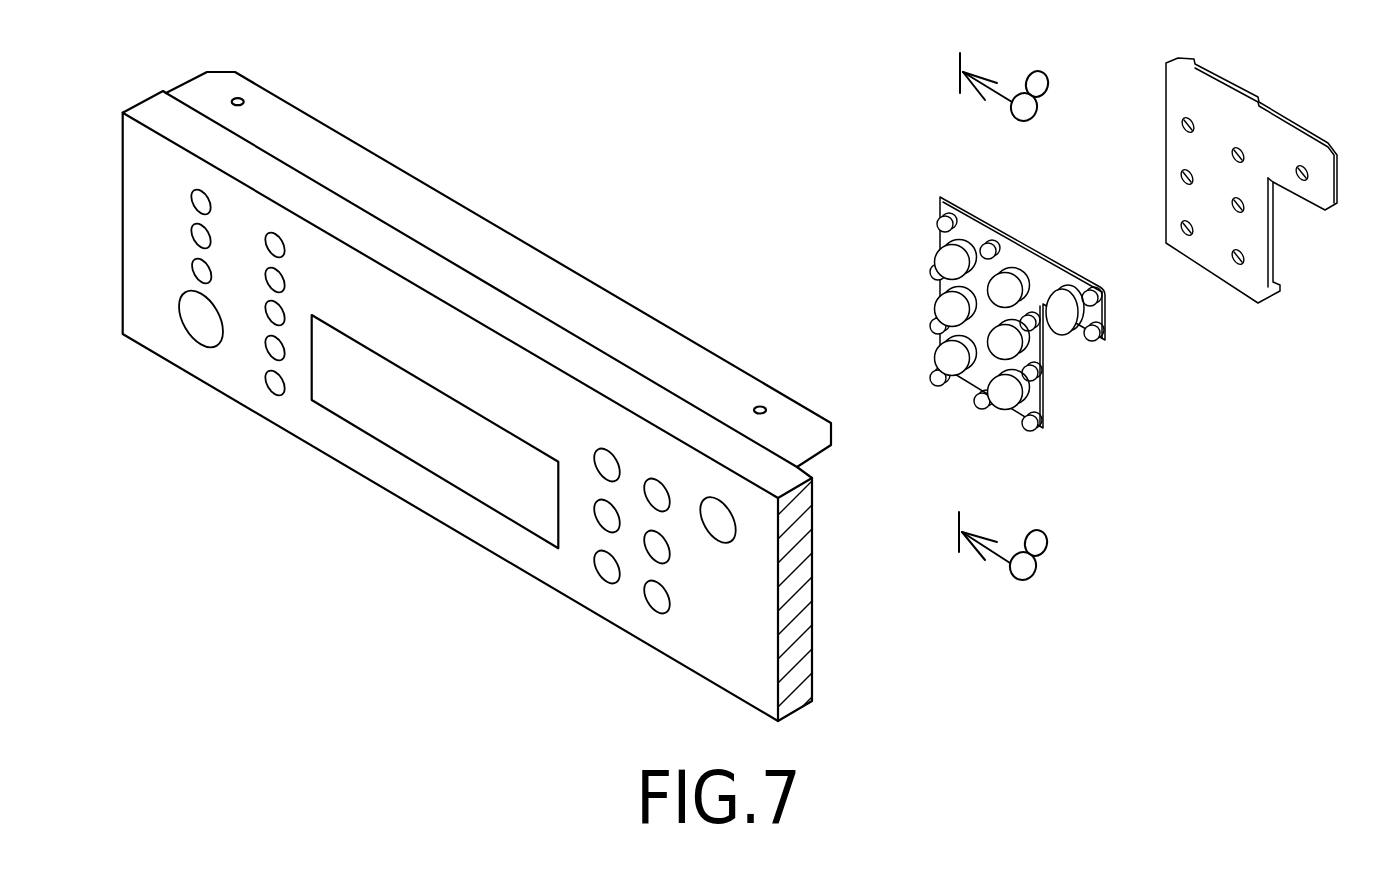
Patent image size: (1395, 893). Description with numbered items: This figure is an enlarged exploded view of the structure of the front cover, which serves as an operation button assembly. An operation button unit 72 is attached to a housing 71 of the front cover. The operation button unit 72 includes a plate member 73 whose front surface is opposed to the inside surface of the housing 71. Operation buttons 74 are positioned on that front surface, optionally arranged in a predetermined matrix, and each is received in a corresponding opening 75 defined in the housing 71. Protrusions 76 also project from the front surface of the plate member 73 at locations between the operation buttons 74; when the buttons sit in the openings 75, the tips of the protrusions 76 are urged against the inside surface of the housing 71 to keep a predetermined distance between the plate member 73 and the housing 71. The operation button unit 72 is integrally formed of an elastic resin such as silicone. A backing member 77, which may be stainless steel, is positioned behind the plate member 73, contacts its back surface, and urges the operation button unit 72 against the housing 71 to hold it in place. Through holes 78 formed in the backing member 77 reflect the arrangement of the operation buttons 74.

The housing 71 is at (471, 213).
The operation button unit 72 is at (1009, 294).
The plate member 73 is at (966, 210).
The operation buttons 74 is at (1000, 283).
The openings 75 is at (600, 453).
The protrusions 76 is at (936, 271).
The backing member 77 is at (1217, 63).
The through holes 78 is at (1185, 118).